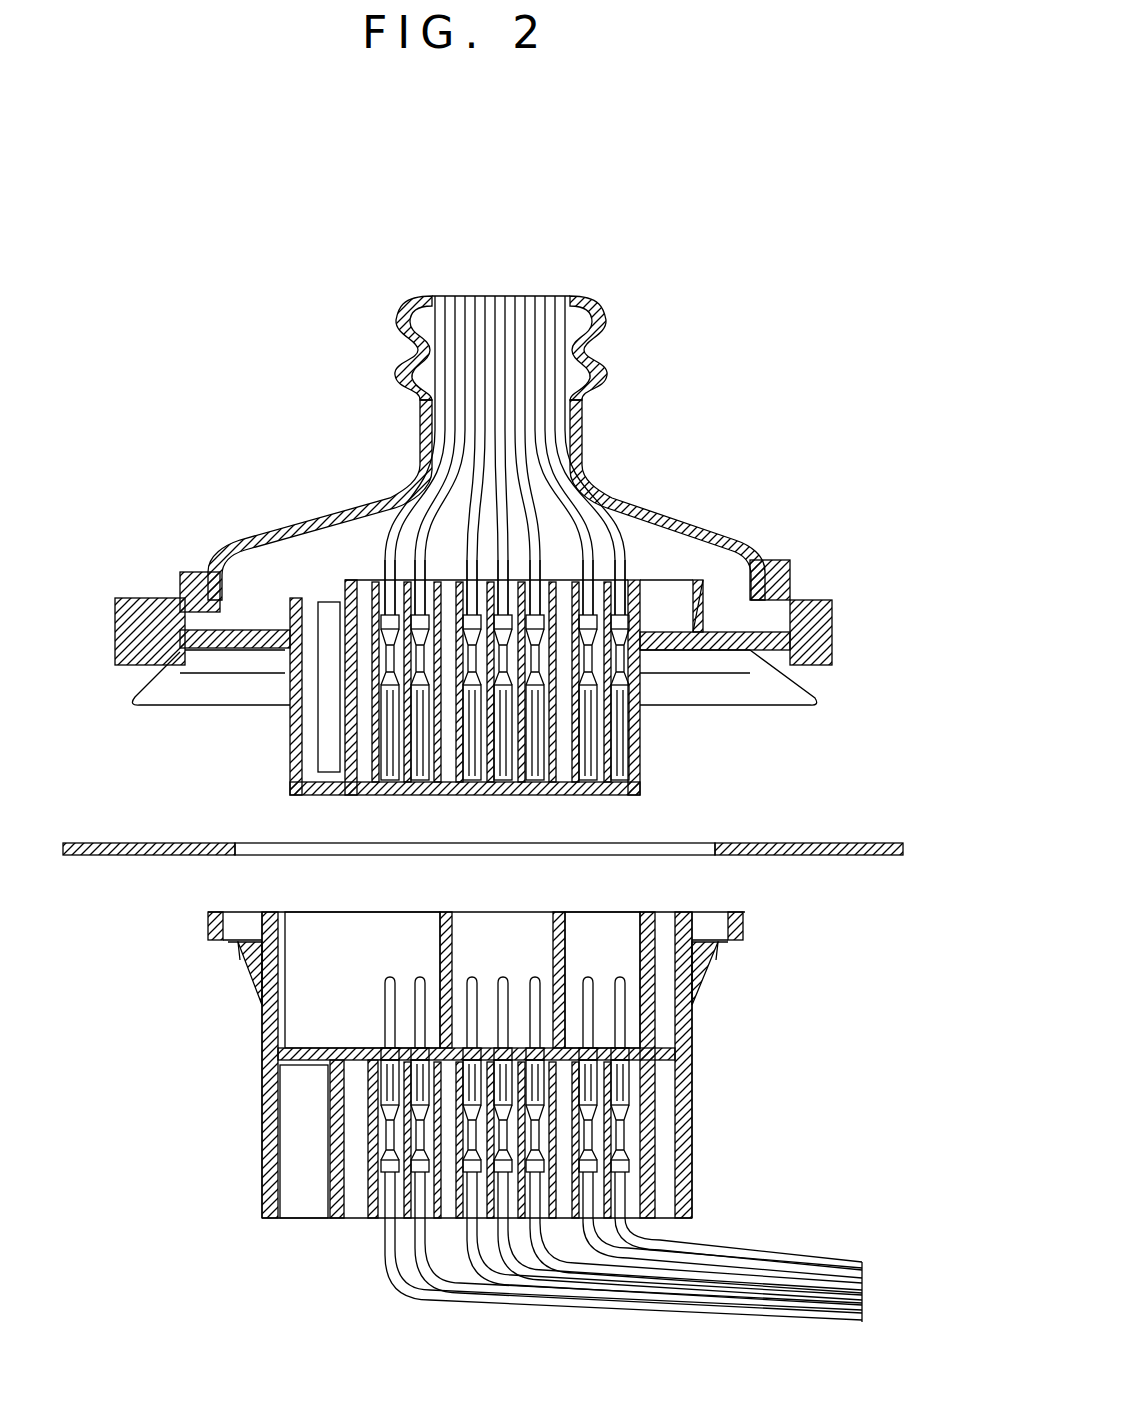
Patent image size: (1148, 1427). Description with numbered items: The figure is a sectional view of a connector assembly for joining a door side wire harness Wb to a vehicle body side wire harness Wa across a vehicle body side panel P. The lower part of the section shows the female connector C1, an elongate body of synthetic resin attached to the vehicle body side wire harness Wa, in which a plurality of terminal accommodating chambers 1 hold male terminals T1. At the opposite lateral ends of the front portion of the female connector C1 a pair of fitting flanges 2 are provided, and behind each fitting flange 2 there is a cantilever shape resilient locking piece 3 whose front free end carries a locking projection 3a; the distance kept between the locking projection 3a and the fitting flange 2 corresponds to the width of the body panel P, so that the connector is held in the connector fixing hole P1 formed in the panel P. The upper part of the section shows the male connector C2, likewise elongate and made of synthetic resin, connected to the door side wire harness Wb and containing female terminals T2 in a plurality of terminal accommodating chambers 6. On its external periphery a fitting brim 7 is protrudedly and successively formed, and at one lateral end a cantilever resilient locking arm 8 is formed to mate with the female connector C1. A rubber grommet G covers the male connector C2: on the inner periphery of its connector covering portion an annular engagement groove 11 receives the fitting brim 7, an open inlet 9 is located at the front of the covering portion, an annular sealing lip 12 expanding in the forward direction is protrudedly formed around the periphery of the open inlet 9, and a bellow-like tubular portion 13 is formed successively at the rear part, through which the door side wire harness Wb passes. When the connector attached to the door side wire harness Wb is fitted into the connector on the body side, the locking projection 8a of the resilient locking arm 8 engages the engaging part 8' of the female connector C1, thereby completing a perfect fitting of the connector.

The door side wire harness Wb is at (497, 300).
The bellow-like tubular portion 13 is at (612, 318).
The terminal accommodating chambers 6 is at (428, 548).
The grommet G is at (700, 515).
The annular engagement groove 11 is at (772, 635).
The fitting brim 7 is at (835, 633).
The locking projection 8a is at (278, 688).
The open inlet 9 is at (681, 672).
The annular sealing lip 12 is at (768, 698).
The male connector C2 is at (248, 782).
The cantilever resilient locking arm 8 is at (433, 705).
The female terminals T2 is at (520, 758).
The connector fixing hole P1 is at (600, 845).
The vehicle body side panel P is at (835, 843).
The engaging part 8' is at (476, 964).
The fitting flanges 2 is at (208, 922).
The locking projection 3a is at (228, 955).
The cantilever shape resilient locking piece 3 is at (242, 985).
The female connector C1 is at (260, 1095).
The male terminals T1 is at (640, 1076).
The terminal accommodating chambers 1 is at (430, 1222).
The vehicle body side wire harness Wa is at (778, 1282).